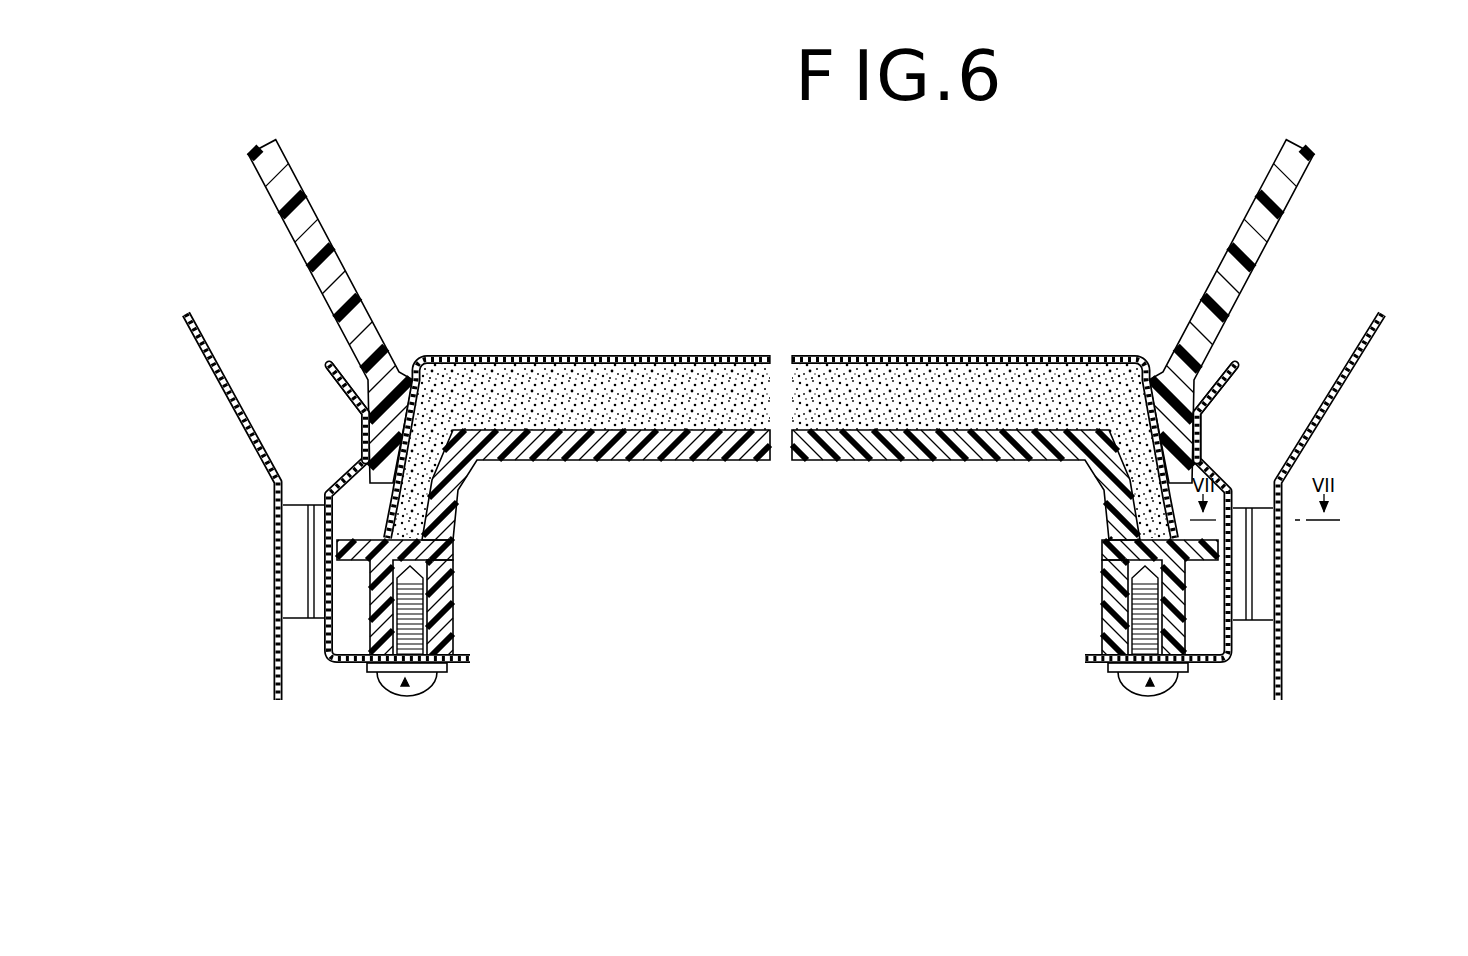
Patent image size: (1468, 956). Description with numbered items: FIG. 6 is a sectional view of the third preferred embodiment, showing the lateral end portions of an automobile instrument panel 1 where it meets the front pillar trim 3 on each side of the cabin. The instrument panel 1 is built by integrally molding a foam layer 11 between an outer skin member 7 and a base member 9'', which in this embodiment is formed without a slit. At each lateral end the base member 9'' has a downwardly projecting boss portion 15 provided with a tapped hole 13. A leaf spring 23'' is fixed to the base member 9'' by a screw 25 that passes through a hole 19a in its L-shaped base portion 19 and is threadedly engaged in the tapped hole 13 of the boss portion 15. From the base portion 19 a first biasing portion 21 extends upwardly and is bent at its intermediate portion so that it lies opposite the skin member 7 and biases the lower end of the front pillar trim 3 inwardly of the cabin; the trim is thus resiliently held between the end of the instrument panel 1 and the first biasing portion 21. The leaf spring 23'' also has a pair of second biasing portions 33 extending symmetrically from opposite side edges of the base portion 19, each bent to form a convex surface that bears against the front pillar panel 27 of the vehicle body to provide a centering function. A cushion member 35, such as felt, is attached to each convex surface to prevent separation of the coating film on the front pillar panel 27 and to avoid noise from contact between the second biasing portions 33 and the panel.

The instrument panel 1 is at (781, 394).
The front pillar trim 3 is at (310, 224).
The skin member 7 is at (1027, 358).
The base member 9'' is at (636, 487).
The foam layer 11 is at (962, 385).
The tapped hole 13 is at (447, 576).
The boss portion 15 is at (455, 633).
The L-shaped base portion 19 is at (352, 668).
The hole 19a is at (430, 676).
The first biasing portion 21 is at (326, 368).
The leaf spring 23'' is at (290, 386).
The screw 25 is at (405, 692).
The front pillar panel 27 is at (197, 330).
The second biasing portion 33 is at (312, 591).
The cushion member 35 is at (292, 553).